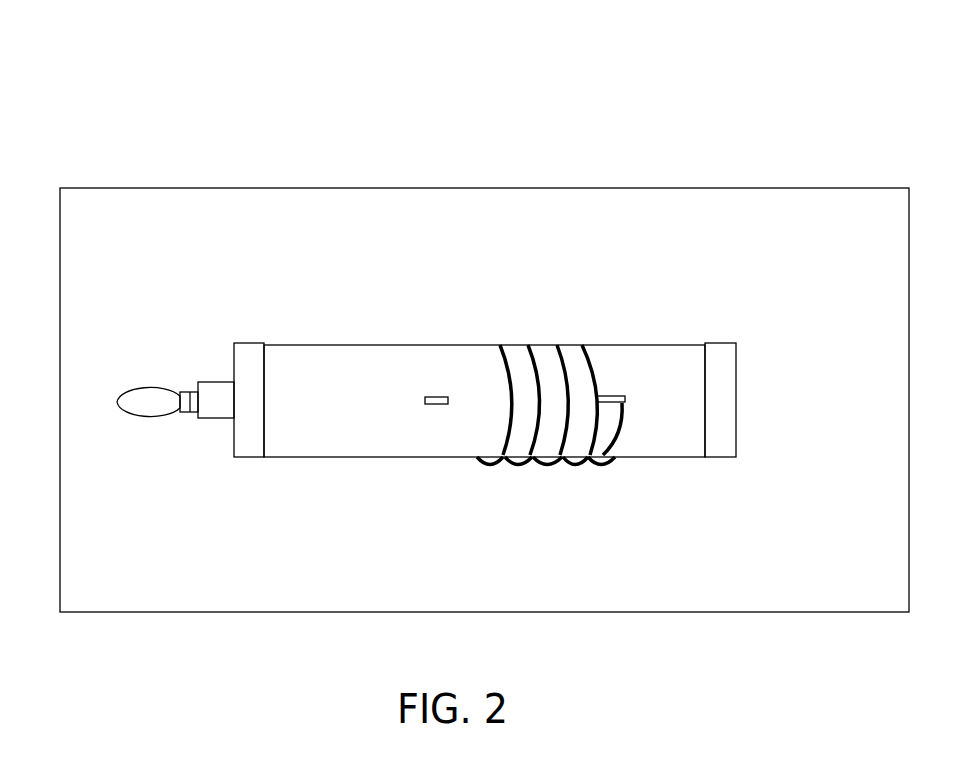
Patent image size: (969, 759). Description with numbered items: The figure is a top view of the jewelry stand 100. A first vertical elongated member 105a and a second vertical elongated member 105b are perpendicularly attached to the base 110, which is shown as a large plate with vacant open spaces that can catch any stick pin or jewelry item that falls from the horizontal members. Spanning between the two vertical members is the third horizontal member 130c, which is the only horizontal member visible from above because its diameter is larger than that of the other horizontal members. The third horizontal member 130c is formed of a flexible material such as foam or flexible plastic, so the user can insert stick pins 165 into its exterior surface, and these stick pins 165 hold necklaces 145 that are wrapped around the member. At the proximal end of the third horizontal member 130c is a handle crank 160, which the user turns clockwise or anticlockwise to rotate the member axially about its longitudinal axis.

The jewelry stand 100 is at (158, 79).
The base 110 is at (532, 188).
The first vertical elongated member 105a is at (247, 350).
The second vertical elongated member 105b is at (722, 353).
The third horizontal member 130c is at (375, 353).
The necklaces 145 is at (500, 345).
The handle crank 160 is at (145, 390).
The stick pins 165 is at (612, 395).